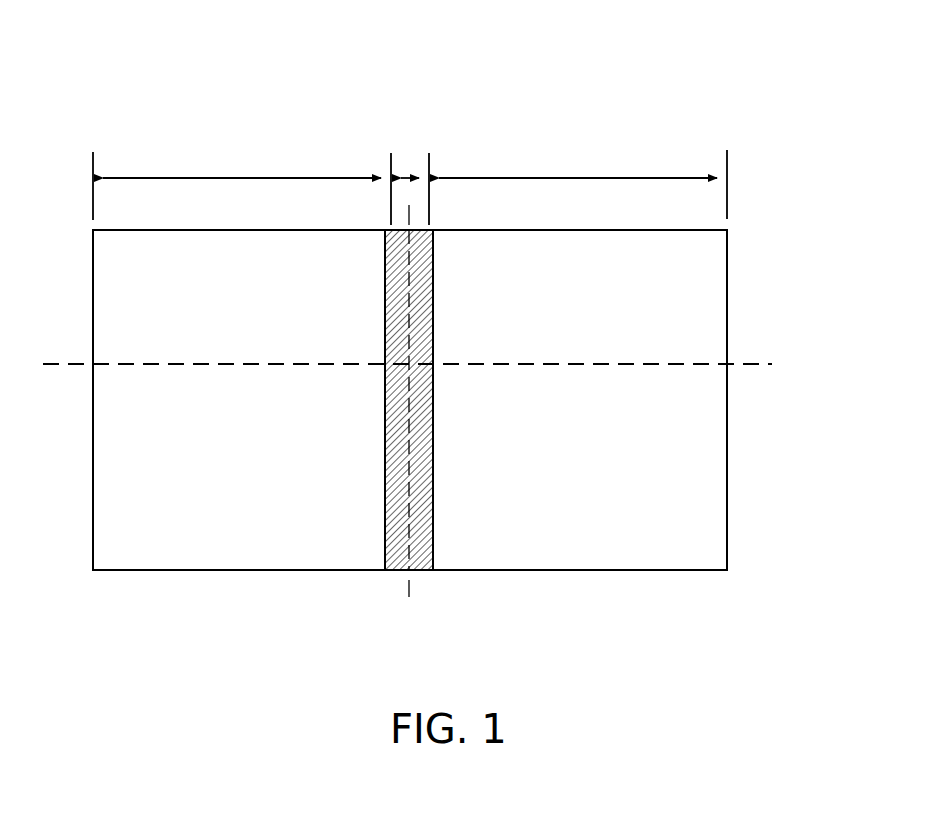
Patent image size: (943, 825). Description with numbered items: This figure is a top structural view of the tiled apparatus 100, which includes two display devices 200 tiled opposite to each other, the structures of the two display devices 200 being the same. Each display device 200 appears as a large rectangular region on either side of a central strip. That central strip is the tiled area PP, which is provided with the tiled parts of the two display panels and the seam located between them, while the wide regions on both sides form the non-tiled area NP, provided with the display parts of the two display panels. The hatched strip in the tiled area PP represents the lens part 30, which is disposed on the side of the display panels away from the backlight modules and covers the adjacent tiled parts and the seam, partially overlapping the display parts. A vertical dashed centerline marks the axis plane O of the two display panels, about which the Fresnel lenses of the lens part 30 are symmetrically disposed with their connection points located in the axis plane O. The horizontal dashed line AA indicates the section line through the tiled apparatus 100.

The tiled apparatus 100 is at (262, 80).
The display device 200 is at (245, 522).
The lens part 30 is at (388, 503).
The axis plane O is at (409, 420).
The section line AA is at (430, 366).
The non-tiled area NP is at (410, 178).
The tiled area PP is at (410, 176).